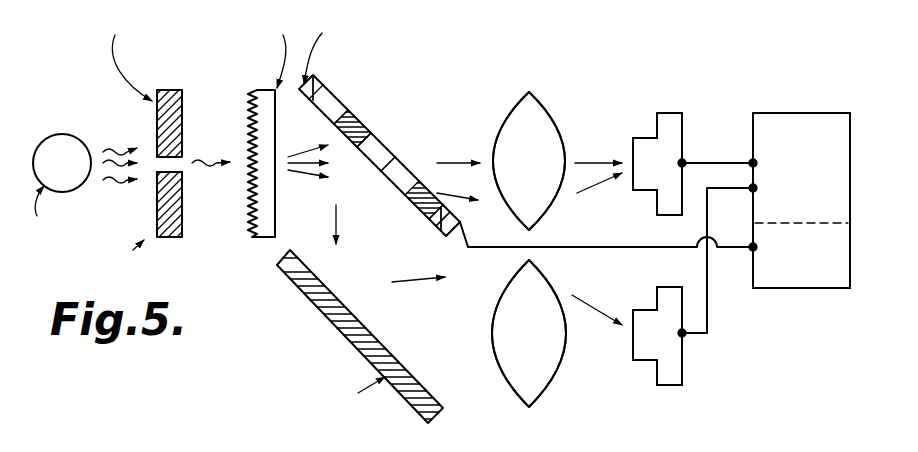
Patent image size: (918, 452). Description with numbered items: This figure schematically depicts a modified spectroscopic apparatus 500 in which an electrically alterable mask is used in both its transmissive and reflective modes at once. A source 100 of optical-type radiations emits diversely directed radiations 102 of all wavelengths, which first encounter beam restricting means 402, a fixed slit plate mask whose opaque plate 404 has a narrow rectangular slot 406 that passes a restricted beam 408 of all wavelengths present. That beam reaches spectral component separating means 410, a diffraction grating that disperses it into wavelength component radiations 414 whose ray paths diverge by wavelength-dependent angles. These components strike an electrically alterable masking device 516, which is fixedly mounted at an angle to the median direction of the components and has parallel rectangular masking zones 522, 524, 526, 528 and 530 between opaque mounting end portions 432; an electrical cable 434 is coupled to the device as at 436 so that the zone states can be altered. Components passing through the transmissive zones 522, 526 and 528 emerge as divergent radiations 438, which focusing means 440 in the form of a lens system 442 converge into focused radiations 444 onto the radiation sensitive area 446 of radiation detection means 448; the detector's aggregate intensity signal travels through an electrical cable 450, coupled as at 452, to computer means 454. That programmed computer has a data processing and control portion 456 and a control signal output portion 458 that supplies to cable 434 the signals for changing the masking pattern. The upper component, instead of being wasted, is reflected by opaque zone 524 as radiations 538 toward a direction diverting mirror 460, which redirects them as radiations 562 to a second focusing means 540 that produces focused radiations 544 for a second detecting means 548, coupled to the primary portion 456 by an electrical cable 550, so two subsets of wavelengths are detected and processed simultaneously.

The source of optical-type radiations 100 is at (50, 131).
The radiations 102 is at (108, 183).
The beam restricting means 402 is at (172, 88).
The opaque plate 404 is at (181, 232).
The slot 406 is at (180, 170).
The restricted beam of radiations 408 is at (212, 143).
The spectroscopic apparatus 500 is at (115, 252).
The spectral component separating means 410 is at (265, 88).
The wavelength component radiations 414 is at (290, 157).
The reflected wavelength component radiations 538 is at (335, 212).
The end portions of the masking device 432 is at (324, 84).
The electrically alterable masking device 516 is at (314, 76).
The masking zone 522 is at (341, 103).
The masking zone 524 is at (359, 124).
The masking zone 526 is at (386, 155).
The masking zone 528 is at (412, 207).
The masking zone 530 is at (440, 230).
The electrical coupling to masking device 436 is at (451, 228).
The transmitted wavelength component radiations 438 is at (452, 157).
The focusing means 440 is at (534, 90).
The lens system 442 is at (545, 107).
The focused wavelength component radiations 444 is at (598, 186).
The radiation sensitive area 446 is at (631, 143).
The radiation detection means 448 is at (669, 111).
The electrical coupling to detecting means 452 is at (684, 160).
The electrical cable 450 is at (707, 163).
The computer means 454 is at (792, 111).
The data processing and computer control portion 456 is at (845, 166).
The control signal output portion 458 is at (846, 262).
The electrical cable 434 is at (563, 247).
The direction diverting mirror 460 is at (352, 345).
The redirected wavelength component radiations 562 is at (416, 286).
The focused wavelength component radiations 544 is at (603, 280).
The second focusing means 540 is at (535, 404).
The second detecting means 548 is at (677, 391).
The electrical cable 550 is at (708, 306).